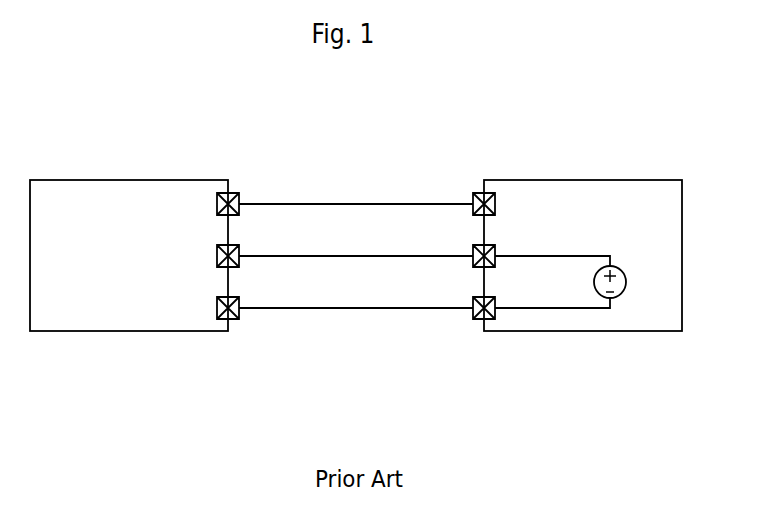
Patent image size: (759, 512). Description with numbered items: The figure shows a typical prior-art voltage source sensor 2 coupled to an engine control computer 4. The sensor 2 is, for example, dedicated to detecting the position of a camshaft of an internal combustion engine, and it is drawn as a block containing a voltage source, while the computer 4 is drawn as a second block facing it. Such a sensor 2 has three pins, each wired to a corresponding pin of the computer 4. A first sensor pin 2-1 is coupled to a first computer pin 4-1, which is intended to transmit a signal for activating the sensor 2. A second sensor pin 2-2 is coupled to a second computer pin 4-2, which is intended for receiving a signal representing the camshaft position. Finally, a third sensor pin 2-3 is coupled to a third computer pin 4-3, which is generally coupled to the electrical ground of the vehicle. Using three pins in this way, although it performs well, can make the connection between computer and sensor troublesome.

The engine control computer 4 is at (128, 180).
The first computer pin 4-1 is at (230, 193).
The second computer pin 4-2 is at (238, 246).
The third computer pin 4-3 is at (240, 320).
The voltage source sensor 2 is at (627, 180).
The first sensor pin 2-1 is at (480, 193).
The second sensor pin 2-2 is at (474, 246).
The third sensor pin 2-3 is at (473, 320).